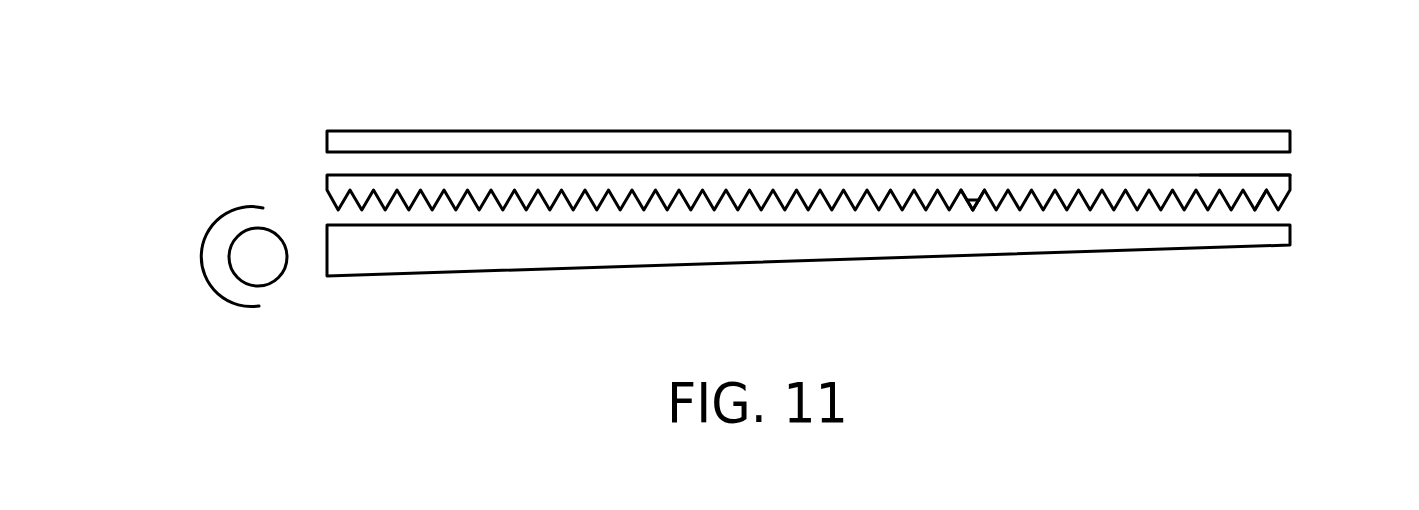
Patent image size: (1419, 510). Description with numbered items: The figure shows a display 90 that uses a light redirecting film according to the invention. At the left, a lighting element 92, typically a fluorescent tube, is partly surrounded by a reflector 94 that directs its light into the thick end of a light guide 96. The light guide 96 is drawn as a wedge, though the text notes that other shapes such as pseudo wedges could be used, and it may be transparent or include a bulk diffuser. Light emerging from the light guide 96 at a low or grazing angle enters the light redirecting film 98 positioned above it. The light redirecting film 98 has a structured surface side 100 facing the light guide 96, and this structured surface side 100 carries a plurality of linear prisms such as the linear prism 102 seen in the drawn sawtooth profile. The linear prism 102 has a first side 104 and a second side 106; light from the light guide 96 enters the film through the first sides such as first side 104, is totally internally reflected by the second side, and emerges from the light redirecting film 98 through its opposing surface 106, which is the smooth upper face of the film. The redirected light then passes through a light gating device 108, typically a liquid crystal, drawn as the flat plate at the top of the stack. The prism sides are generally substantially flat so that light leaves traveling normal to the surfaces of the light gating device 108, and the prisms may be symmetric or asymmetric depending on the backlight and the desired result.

The display 90 is at (1278, 100).
The lighting element 92 is at (270, 283).
The reflector 94 is at (247, 307).
The light guide 96 is at (541, 268).
The light redirecting film 98 is at (326, 176).
The structured surface side 100 is at (1259, 203).
The linear prism 102 is at (972, 206).
The first side 104 is at (967, 203).
The second side 106 is at (1273, 175).
The light gating device 108 is at (355, 131).